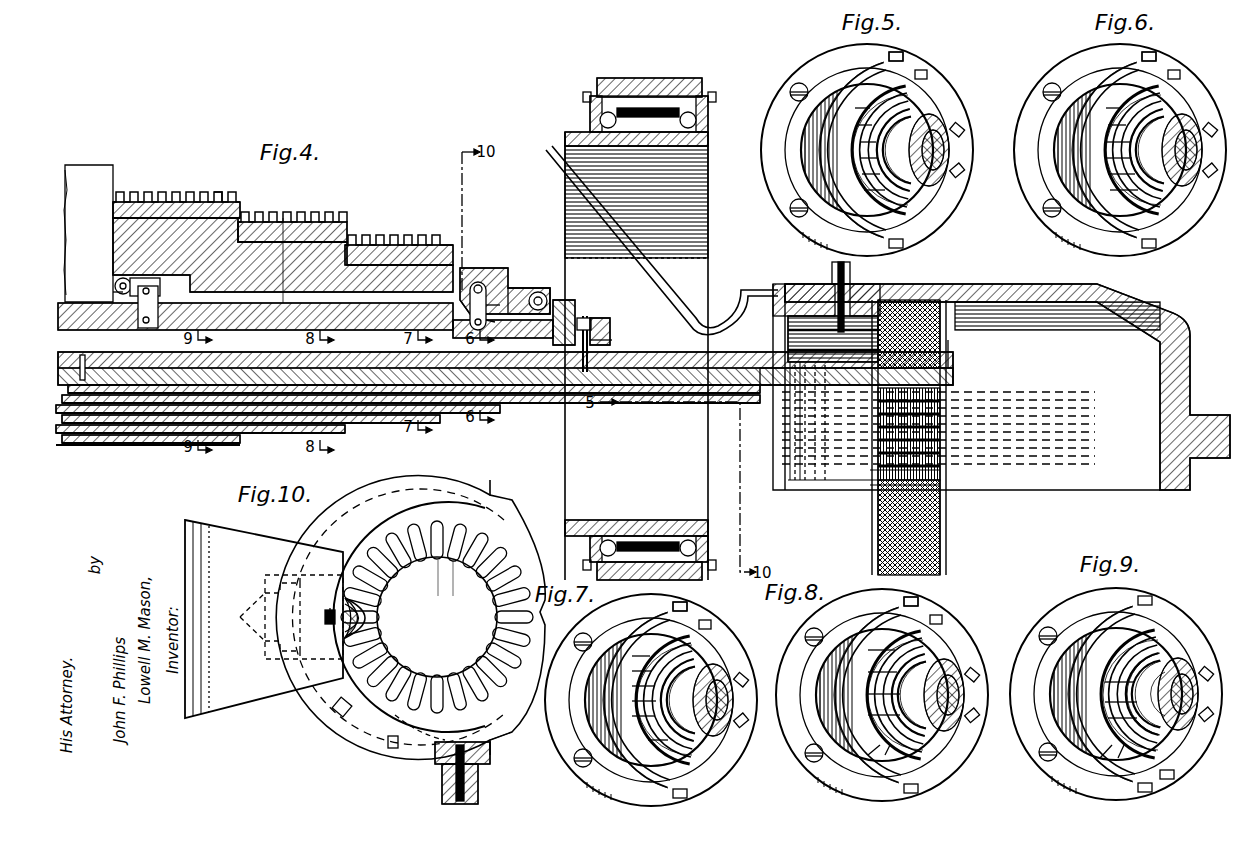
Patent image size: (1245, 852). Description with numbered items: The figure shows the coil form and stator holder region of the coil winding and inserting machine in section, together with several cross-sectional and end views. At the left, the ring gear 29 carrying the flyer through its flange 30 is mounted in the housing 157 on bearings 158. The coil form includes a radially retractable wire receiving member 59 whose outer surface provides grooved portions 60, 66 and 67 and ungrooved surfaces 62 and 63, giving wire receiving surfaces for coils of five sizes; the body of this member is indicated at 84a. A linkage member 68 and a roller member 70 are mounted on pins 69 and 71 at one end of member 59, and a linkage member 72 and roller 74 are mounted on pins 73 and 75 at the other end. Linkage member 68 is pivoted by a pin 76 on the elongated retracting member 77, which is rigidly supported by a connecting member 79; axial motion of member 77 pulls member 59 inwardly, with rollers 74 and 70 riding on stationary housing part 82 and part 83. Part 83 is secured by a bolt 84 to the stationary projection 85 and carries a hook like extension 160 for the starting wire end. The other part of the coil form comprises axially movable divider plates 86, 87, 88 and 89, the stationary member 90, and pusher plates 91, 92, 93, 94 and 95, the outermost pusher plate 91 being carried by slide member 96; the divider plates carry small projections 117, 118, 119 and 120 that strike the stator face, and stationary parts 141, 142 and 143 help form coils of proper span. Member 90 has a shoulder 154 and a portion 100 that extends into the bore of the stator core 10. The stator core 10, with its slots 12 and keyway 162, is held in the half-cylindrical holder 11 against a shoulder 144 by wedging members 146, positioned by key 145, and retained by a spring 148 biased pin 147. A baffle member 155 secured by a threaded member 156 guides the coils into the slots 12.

In FIG. 4, the stator core 10 is at (916, 300).
In FIG. 10, the stator core 10 is at (512, 508).
In FIG. 4, the stator holder member 11 is at (1162, 310).
In FIG. 10, the stator holder member 11 is at (398, 758).
In FIG. 4, the stator slots 12 is at (942, 488).
In FIG. 10, the stator slots 12 is at (440, 548).
In FIG. 4, the ring gear 29 is at (640, 520).
In FIG. 4, the flange 30 is at (565, 140).
In FIG. 4, the wire receiving member 59 is at (168, 232).
In FIG. 4, the grooved portion 60 is at (385, 240).
In FIG. 4, the wire receiving surface 62 is at (492, 268).
In FIG. 4, the wire receiving surface 63 is at (522, 290).
In FIG. 4, the grooved portion 66 is at (318, 218).
In FIG. 4, the grooved portion 67 is at (216, 196).
In FIG. 4, the linkage member 68 is at (499, 307).
In FIG. 4, the pin 69 is at (478, 284).
In FIG. 4, the roller member 70 is at (560, 301).
In FIG. 4, the pin 71 is at (539, 293).
In FIG. 4, the linkage member 72 is at (140, 309).
In FIG. 4, the pin 73 is at (150, 288).
In FIG. 4, the roller 74 is at (114, 282).
In FIG. 4, the pin 75 is at (113, 292).
In FIG. 4, the pin 76 is at (495, 322).
In FIG. 4, the retracting member 77 is at (505, 359).
In FIG. 4, the connecting member 79 is at (142, 321).
In FIG. 4, the stationary housing part 82 is at (92, 165).
In FIG. 4, the part 83 is at (606, 330).
In FIG. 4, the bolt 84 is at (610, 338).
In FIG. 4, the rack body 84a is at (283, 305).
In FIG. 5, the projection 85 is at (945, 165).
In FIG. 6, the projection 85 is at (1182, 180).
In FIG. 7, the projection 85 is at (722, 668).
In FIG. 8, the projection 85 is at (945, 712).
In FIG. 9, the projection 85 is at (1185, 655).
In FIG. 10, the projection 85 is at (375, 602).
In FIG. 4, the divider plate 86 is at (217, 443).
In FIG. 5, the divider plate 86 is at (851, 125).
In FIG. 6, the divider plate 86 is at (1104, 125).
In FIG. 7, the divider plate 86 is at (631, 700).
In FIG. 8, the divider plate 86 is at (887, 760).
In FIG. 9, the divider plate 86 is at (1119, 765).
In FIG. 4, the divider plate 87 is at (994, 427).
In FIG. 5, the divider plate 87 is at (855, 158).
In FIG. 6, the divider plate 87 is at (1106, 158).
In FIG. 7, the divider plate 87 is at (629, 670).
In FIG. 8, the divider plate 87 is at (871, 693).
In FIG. 9, the divider plate 87 is at (1109, 701).
In FIG. 4, the divider plate 88 is at (378, 425).
In FIG. 5, the divider plate 88 is at (860, 190).
In FIG. 6, the divider plate 88 is at (1111, 190).
In FIG. 7, the divider plate 88 is at (715, 742).
In FIG. 8, the divider plate 88 is at (868, 649).
In FIG. 9, the divider plate 88 is at (1160, 655).
In FIG. 4, the divider plate 89 is at (488, 402).
In FIG. 5, the divider plate 89 is at (925, 180).
In FIG. 6, the divider plate 89 is at (1182, 165).
In FIG. 7, the divider plate 89 is at (722, 714).
In FIG. 8, the divider plate 89 is at (935, 670).
In FIG. 9, the divider plate 89 is at (1190, 665).
In FIG. 4, the stationary member 90 is at (560, 384).
In FIG. 5, the stationary member 90 is at (940, 146).
In FIG. 6, the stationary member 90 is at (1182, 140).
In FIG. 7, the stationary member 90 is at (720, 689).
In FIG. 8, the stationary member 90 is at (945, 693).
In FIG. 9, the stationary member 90 is at (1180, 688).
In FIG. 10, the stationary member 90 is at (375, 617).
In FIG. 4, the pusher plate 91 is at (1090, 455).
In FIG. 5, the pusher plate 91 is at (848, 108).
In FIG. 6, the pusher plate 91 is at (1101, 108).
In FIG. 7, the pusher plate 91 is at (630, 715).
In FIG. 8, the pusher plate 91 is at (872, 758).
In FIG. 9, the pusher plate 91 is at (1104, 760).
In FIG. 4, the pusher plate 92 is at (126, 445).
In FIG. 5, the pusher plate 92 is at (854, 142).
In FIG. 6, the pusher plate 92 is at (1105, 142).
In FIG. 7, the pusher plate 92 is at (630, 685).
In FIG. 8, the pusher plate 92 is at (871, 714).
In FIG. 9, the pusher plate 92 is at (1110, 717).
In FIG. 4, the pusher plate 93 is at (152, 445).
In FIG. 5, the pusher plate 93 is at (857, 174).
In FIG. 6, the pusher plate 93 is at (1109, 174).
In FIG. 7, the pusher plate 93 is at (628, 655).
In FIG. 8, the pusher plate 93 is at (870, 671).
In FIG. 9, the pusher plate 93 is at (1107, 681).
In FIG. 4, the pusher plate 94 is at (184, 445).
In FIG. 5, the pusher plate 94 is at (920, 115).
In FIG. 6, the pusher plate 94 is at (1172, 115).
In FIG. 7, the pusher plate 94 is at (722, 726).
In FIG. 8, the pusher plate 94 is at (925, 655).
In FIG. 9, the pusher plate 94 is at (1170, 660).
In FIG. 4, the pusher plate 95 is at (292, 433).
In FIG. 5, the pusher plate 95 is at (935, 130).
In FIG. 6, the pusher plate 95 is at (1182, 150).
In FIG. 7, the pusher plate 95 is at (722, 703).
In FIG. 8, the pusher plate 95 is at (945, 680).
In FIG. 9, the pusher plate 95 is at (1180, 675).
In FIG. 4, the slide member 96 is at (655, 355).
In FIG. 5, the slide member 96 is at (808, 150).
In FIG. 6, the slide member 96 is at (1062, 150).
In FIG. 7, the slide member 96 is at (590, 705).
In FIG. 8, the slide member 96 is at (825, 695).
In FIG. 9, the slide member 96 is at (1062, 695).
In FIG. 4, the portion of stationary member 100 is at (955, 380).
In FIG. 4, the projection 117 is at (868, 430).
In FIG. 4, the projection 118 is at (858, 420).
In FIG. 4, the projection 119 is at (845, 410).
In FIG. 4, the projection 120 is at (830, 400).
In FIG. 5, the stationary part 141 is at (848, 66).
In FIG. 6, the stationary part 141 is at (1142, 66).
In FIG. 7, the stationary part 141 is at (666, 614).
In FIG. 8, the stationary part 141 is at (902, 612).
In FIG. 9, the stationary part 141 is at (1140, 606).
In FIG. 5, the stationary part 142 is at (905, 85).
In FIG. 6, the stationary part 142 is at (1156, 80).
In FIG. 7, the stationary part 142 is at (690, 630).
In FIG. 8, the stationary part 142 is at (930, 625).
In FIG. 5, the stationary part 143 is at (925, 95).
In FIG. 6, the stationary part 143 is at (1176, 95).
In FIG. 7, the stationary part 143 is at (705, 640).
In FIG. 8, the stationary part 143 is at (945, 765).
In FIG. 9, the stationary part 143 is at (1160, 777).
In FIG. 4, the shoulder 144 is at (962, 300).
In FIG. 10, the key 145 is at (338, 712).
In FIG. 4, the wedging member 146 is at (870, 300).
In FIG. 10, the wedging member 146 is at (392, 742).
In FIG. 10, the pin 147 is at (490, 755).
In FIG. 10, the spring 148 is at (478, 785).
In FIG. 4, the shoulder 154 is at (950, 362).
In FIG. 4, the baffle member 155 is at (636, 300).
In FIG. 10, the baffle member 155 is at (248, 700).
In FIG. 4, the threaded member 156 is at (832, 272).
In FIG. 10, the threaded member 156 is at (284, 617).
In FIG. 4, the housing 157 is at (651, 78).
In FIG. 4, the bearings 158 is at (592, 118).
In FIG. 4, the hook like extension 160 is at (593, 320).
In FIG. 10, the keyway 162 is at (348, 740).